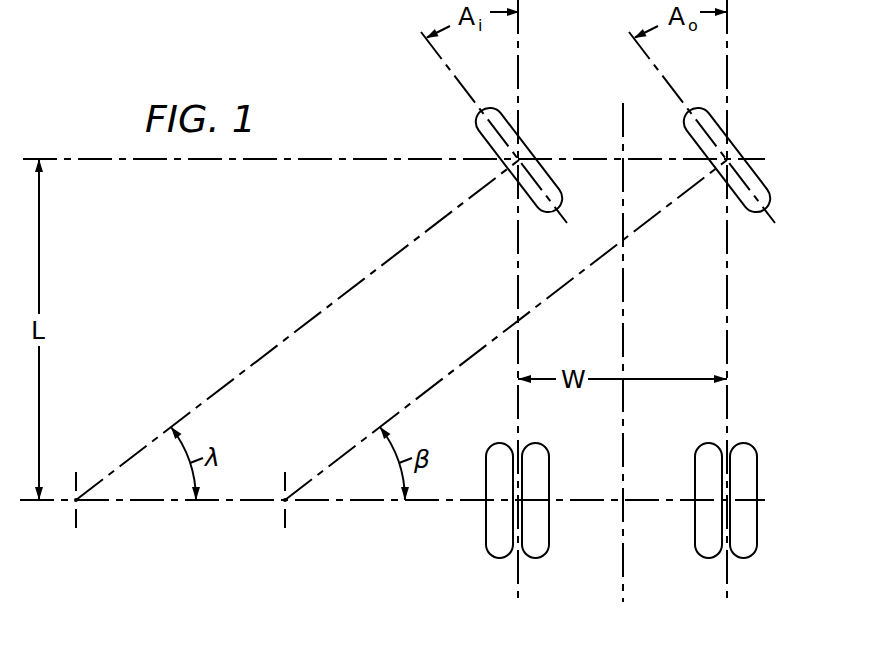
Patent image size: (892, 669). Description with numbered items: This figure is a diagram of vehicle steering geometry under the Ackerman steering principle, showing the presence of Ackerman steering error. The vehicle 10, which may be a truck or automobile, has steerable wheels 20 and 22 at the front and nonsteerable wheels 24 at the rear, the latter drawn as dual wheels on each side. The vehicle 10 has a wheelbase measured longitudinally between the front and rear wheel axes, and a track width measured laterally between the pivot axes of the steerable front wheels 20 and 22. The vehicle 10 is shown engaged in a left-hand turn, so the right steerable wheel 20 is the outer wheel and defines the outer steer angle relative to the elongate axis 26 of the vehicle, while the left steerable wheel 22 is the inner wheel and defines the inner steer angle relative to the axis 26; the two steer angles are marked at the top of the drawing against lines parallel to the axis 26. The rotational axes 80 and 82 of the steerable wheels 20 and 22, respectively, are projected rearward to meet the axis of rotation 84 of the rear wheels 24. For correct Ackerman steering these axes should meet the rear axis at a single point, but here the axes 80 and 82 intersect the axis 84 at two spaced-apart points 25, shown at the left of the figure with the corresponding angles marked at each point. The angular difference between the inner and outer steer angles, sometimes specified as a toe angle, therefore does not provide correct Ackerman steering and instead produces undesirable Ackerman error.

The vehicle 10 is at (751, 317).
The right steerable wheel 20 is at (744, 156).
The left steerable wheel 22 is at (536, 156).
The nonsteerable wheels 24 is at (535, 556).
The spaced-apart points 25 is at (78, 503).
The elongate axis of the vehicle 26 is at (624, 327).
The rotational axis of the right steerable wheel 80 is at (420, 395).
The rotational axis of the left steerable wheel 82 is at (300, 329).
The axis of rotation of the rear wheels 84 is at (258, 501).